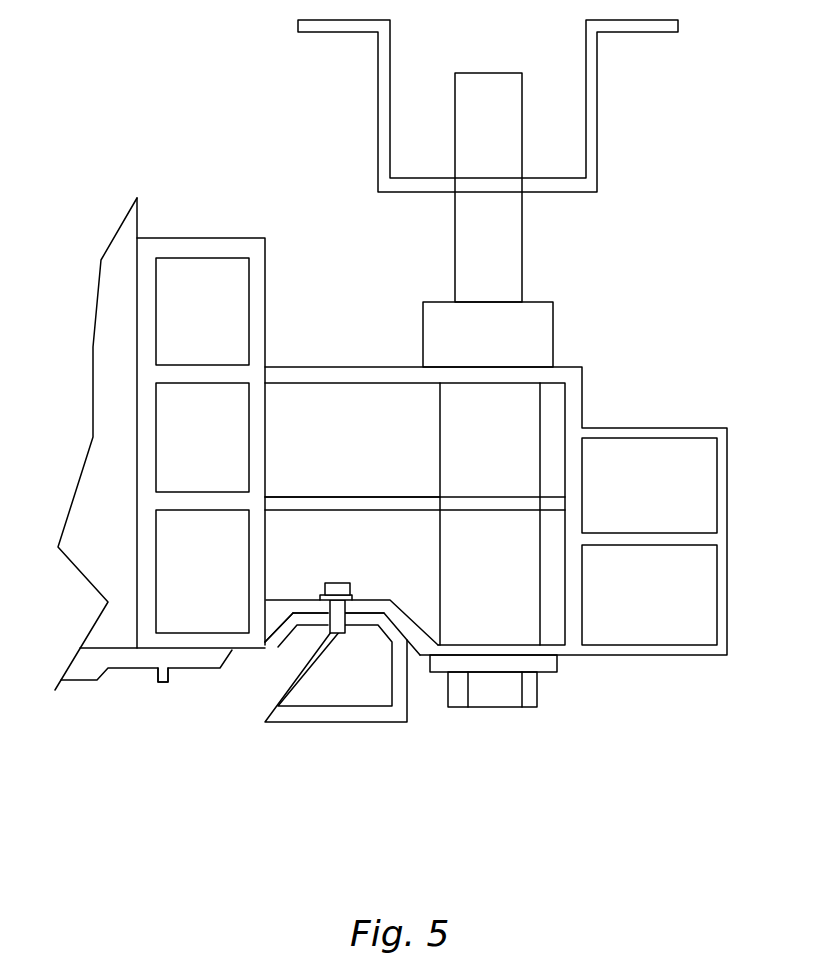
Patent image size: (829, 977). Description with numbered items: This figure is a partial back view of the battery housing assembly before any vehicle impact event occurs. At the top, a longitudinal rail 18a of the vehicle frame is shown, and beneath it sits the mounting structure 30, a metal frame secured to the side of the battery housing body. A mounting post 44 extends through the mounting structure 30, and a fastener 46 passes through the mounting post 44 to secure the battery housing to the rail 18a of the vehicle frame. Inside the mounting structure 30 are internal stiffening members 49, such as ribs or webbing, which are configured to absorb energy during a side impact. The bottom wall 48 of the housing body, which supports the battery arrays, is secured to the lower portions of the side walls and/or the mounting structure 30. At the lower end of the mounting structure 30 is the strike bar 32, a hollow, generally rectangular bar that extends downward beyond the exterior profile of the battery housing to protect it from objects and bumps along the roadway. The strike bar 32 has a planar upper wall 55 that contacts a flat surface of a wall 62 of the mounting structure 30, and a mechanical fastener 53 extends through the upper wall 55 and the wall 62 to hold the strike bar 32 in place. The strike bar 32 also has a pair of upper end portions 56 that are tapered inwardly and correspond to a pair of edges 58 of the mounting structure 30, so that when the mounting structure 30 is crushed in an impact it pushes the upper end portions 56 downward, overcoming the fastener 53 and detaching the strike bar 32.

The longitudinal rail 18a is at (599, 98).
The fastener 46 is at (506, 242).
The mounting post 44 is at (525, 326).
The mounting structure 30 is at (649, 653).
The internal stiffening member 49 is at (400, 497).
The strike bar 32 is at (353, 719).
The planar upper wall 55 is at (320, 633).
The upper end portions 56 is at (273, 632).
The edges 58 is at (268, 612).
The wall 62 is at (305, 613).
The mechanical fastener 53 is at (347, 583).
The bottom wall 48 is at (163, 683).